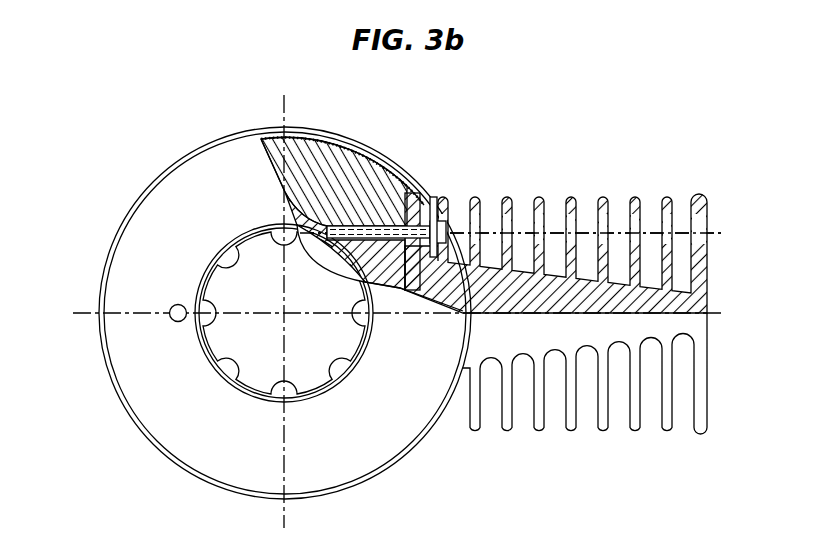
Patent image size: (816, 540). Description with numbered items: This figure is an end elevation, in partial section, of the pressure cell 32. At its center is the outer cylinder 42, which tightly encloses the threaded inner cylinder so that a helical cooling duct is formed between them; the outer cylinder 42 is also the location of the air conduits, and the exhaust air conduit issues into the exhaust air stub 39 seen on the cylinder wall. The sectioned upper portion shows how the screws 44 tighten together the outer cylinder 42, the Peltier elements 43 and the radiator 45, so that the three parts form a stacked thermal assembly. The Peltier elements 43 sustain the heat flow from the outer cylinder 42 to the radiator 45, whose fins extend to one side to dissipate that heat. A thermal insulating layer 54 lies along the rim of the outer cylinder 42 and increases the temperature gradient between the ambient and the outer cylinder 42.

The thermal insulating layer 54 is at (266, 146).
The pressure cell 32 is at (294, 450).
The outer cylinder 42 is at (303, 220).
The Peltier elements 43 is at (395, 190).
The screws 44 is at (433, 197).
The radiator 45 is at (565, 197).
The exhaust air stub 39 is at (171, 306).